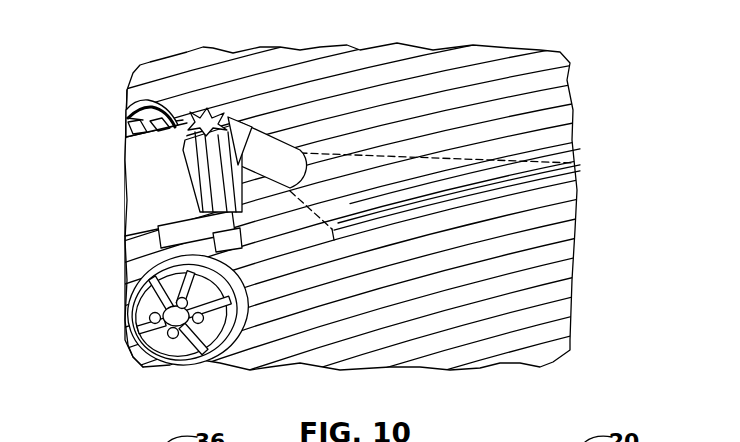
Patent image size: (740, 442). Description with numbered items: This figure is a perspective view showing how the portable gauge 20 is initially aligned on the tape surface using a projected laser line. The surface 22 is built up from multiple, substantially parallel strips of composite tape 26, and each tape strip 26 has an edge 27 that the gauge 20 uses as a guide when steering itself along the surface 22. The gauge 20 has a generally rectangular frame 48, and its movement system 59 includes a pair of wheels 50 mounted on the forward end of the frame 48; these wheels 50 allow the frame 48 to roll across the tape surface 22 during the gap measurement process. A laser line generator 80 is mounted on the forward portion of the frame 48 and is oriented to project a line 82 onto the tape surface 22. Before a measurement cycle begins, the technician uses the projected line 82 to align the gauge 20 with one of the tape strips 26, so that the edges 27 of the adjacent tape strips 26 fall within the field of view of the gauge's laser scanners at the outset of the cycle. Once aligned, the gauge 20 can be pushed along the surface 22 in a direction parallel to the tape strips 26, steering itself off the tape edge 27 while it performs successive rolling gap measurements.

The portable gauge 20 is at (110, 155).
The composite surface 22 is at (311, 311).
The composite tape strips 26 is at (518, 242).
The edge of tape strip 27 is at (392, 212).
The frame 48 is at (138, 245).
The wheels 50 is at (135, 337).
The movement system 59 is at (113, 299).
The laser line generator 80 is at (281, 158).
The projected laser line 82 is at (530, 178).